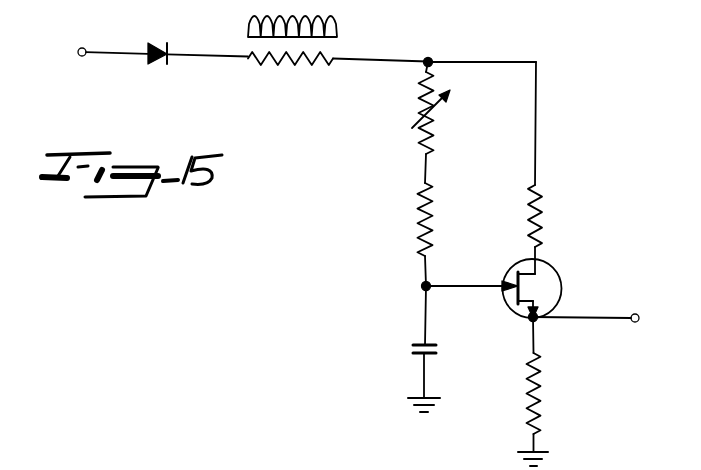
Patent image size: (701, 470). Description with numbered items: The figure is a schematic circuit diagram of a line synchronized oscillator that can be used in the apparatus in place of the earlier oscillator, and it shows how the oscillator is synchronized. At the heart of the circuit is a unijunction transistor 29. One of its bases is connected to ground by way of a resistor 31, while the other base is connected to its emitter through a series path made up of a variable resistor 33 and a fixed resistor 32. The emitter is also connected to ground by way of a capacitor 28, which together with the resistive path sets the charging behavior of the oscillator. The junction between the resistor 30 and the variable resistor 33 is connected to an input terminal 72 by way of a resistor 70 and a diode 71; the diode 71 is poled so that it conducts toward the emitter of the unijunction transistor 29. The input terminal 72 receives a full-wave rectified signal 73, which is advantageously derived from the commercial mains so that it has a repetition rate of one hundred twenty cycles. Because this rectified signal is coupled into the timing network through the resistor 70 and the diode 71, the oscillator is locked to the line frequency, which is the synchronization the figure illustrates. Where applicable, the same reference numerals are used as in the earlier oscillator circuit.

The input terminal 72 is at (80, 56).
The diode 71 is at (156, 64).
The resistor 70 is at (292, 64).
The full-wave rectified signal 73 is at (350, 31).
The variable resistor 33 is at (420, 96).
The fixed resistor 32 is at (417, 214).
The capacitor 28 is at (428, 357).
The resistor 30 is at (545, 210).
The unijunction transistor 29 is at (570, 272).
The resistor 31 is at (540, 400).